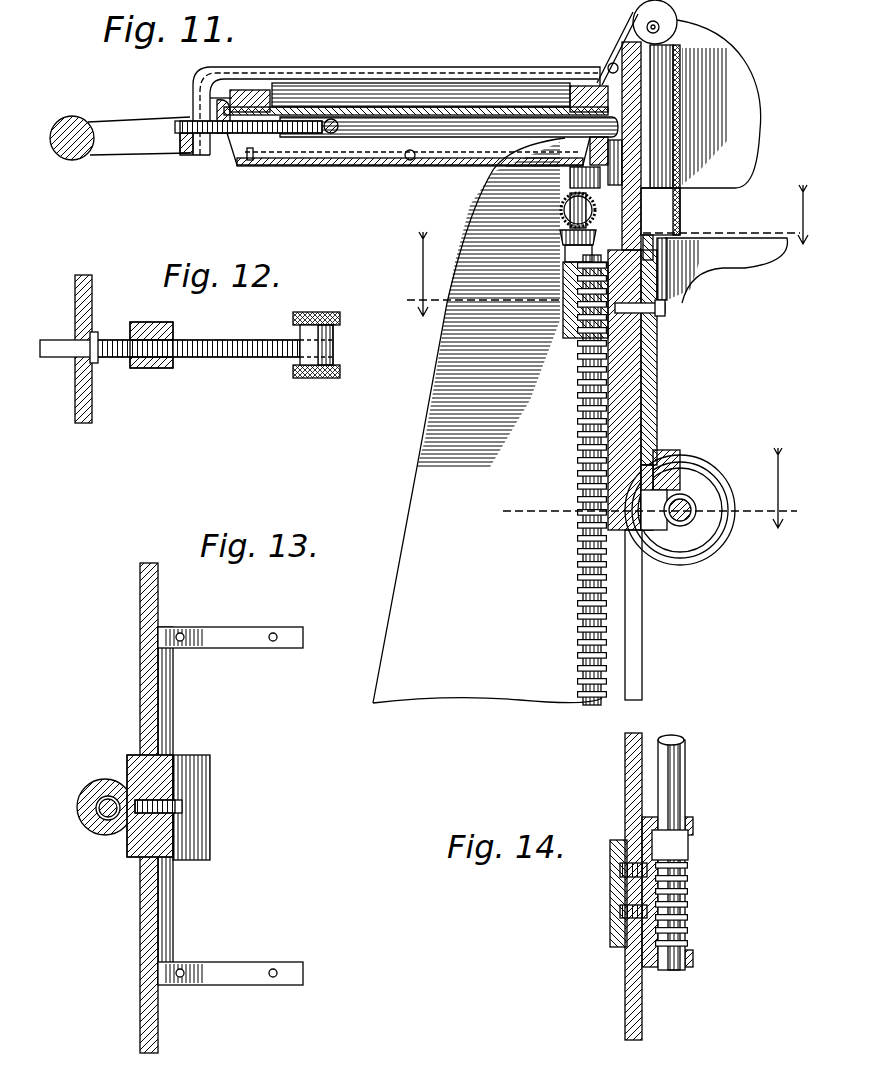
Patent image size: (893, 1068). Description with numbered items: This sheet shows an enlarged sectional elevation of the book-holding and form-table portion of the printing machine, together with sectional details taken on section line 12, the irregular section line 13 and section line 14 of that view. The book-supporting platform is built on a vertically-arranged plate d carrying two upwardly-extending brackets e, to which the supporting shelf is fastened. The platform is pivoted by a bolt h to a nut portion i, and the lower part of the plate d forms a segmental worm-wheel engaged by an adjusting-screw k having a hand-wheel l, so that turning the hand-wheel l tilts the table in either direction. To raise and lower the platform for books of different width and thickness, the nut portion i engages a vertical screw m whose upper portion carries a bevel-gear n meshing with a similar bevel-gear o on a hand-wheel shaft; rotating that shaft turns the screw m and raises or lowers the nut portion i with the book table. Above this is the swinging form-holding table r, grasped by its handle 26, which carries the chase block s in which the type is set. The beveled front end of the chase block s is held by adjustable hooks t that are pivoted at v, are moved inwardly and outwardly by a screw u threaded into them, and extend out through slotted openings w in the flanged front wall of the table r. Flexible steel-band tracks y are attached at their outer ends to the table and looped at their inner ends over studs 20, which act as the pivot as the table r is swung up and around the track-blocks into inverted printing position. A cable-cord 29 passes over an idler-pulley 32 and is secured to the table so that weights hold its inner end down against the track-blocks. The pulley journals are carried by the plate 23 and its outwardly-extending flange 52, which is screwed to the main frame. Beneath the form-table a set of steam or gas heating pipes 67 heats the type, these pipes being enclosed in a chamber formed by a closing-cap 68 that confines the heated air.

In FIG. 11, the handle 26 is at (90, 110).
In FIG. 11, the section line 12 is at (160, 106).
In FIG. 11, the slotted openings w is at (185, 149).
In FIG. 11, the steel bands (flexible tracks) y is at (340, 73).
In FIG. 11, the chase block s is at (264, 90).
In FIG. 11, the adjustable hooks t is at (218, 104).
In FIG. 11, the form-holding platform or table r is at (392, 108).
In FIG. 11, the screw u is at (257, 136).
In FIG. 12, the screw u is at (240, 356).
In FIG. 11, the pivot v is at (331, 135).
In FIG. 12, the pivot v is at (338, 348).
In FIG. 11, the heating pipes 67 is at (360, 162).
In FIG. 11, the closing-cap 68 is at (440, 166).
In FIG. 11, the studs 20 is at (606, 66).
In FIG. 11, the vertically-arranged plate d is at (658, 384).
In FIG. 11, the idler-pulley 32 is at (678, 24).
In FIG. 11, the outwardly-extending flange 52 is at (655, 134).
In FIG. 11, the plate or block 23 is at (701, 104).
In FIG. 11, the cable-cords 29 is at (682, 213).
In FIG. 11, the section line 13 is at (610, 250).
In FIG. 11, the brackets e is at (722, 272).
In FIG. 13, the brackets e is at (229, 648).
In FIG. 11, the bevel-gear o is at (563, 208).
In FIG. 11, the bevel-gear n is at (562, 237).
In FIG. 11, the nut portion i is at (566, 284).
In FIG. 13, the nut portion i is at (104, 836).
In FIG. 11, the screw m is at (578, 450).
In FIG. 13, the screw m is at (96, 809).
In FIG. 11, the bolt h is at (668, 310).
In FIG. 13, the bolt h is at (203, 803).
In FIG. 11, the hand-wheel l is at (712, 486).
In FIG. 11, the adjusting-screw k is at (702, 548).
In FIG. 14, the adjusting-screw k is at (690, 880).
In FIG. 11, the section line 14 is at (661, 488).